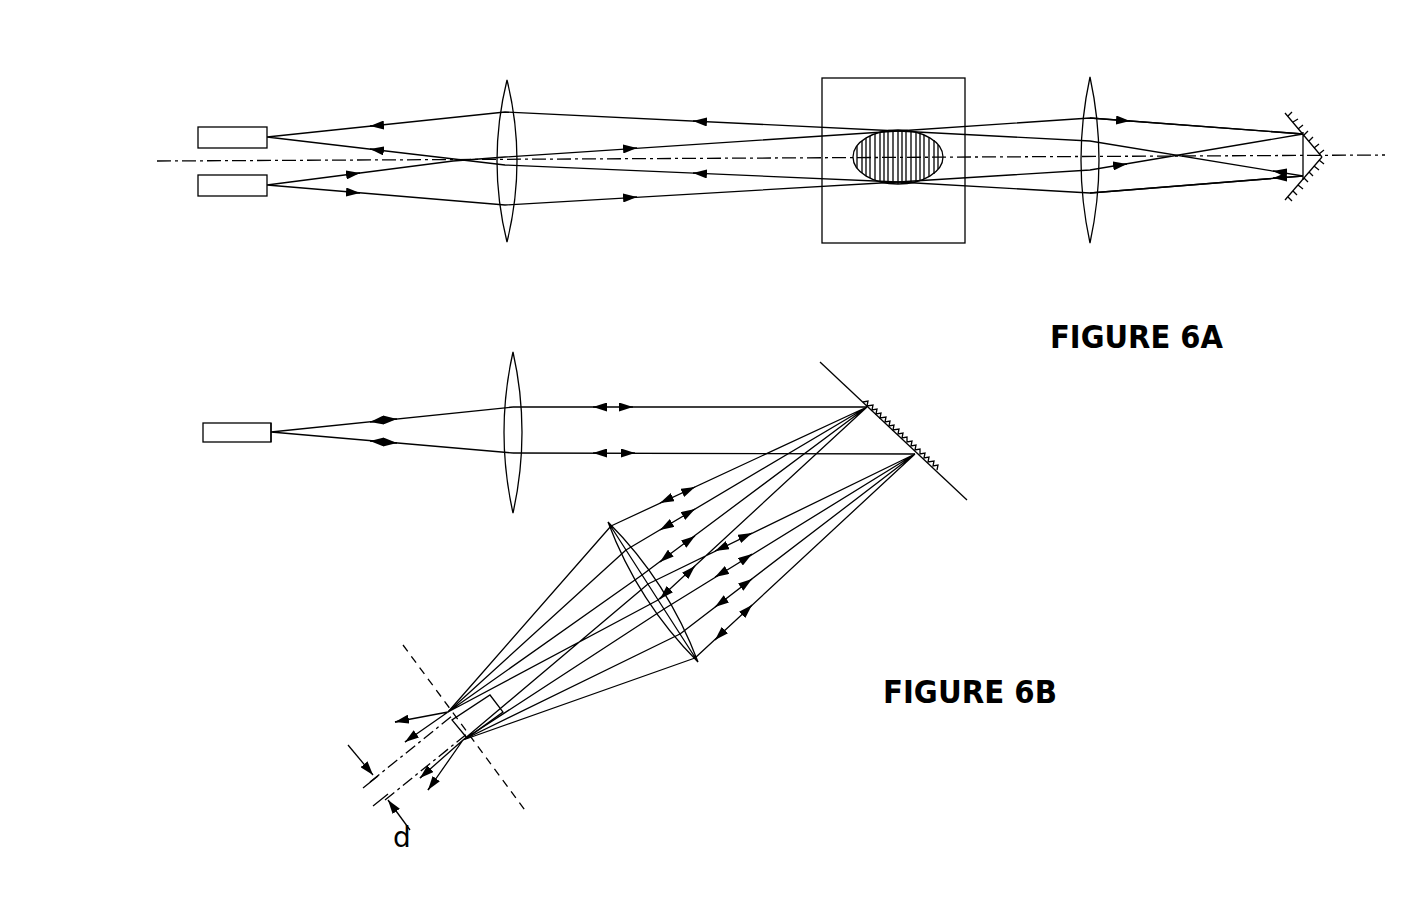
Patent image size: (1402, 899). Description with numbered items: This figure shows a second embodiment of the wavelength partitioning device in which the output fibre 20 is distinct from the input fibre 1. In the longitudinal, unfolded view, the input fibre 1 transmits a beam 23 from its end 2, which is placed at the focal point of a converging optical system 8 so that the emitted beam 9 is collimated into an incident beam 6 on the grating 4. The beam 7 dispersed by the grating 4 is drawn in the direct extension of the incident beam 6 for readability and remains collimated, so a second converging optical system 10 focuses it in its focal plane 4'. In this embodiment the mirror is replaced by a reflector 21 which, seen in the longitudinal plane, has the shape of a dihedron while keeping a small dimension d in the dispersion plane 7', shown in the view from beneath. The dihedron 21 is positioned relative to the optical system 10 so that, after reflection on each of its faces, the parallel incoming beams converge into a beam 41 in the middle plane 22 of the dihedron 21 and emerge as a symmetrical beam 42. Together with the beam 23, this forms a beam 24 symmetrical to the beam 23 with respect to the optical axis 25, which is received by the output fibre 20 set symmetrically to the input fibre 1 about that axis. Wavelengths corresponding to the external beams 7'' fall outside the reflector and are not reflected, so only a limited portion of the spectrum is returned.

In FIG. 6A, the input fibre 1 is at (220, 188).
In FIG. 6B, the input fibre 1 is at (228, 432).
In FIG. 6B, the end of the input fibre 2 is at (272, 430).
In FIG. 6A, the grating 4 is at (901, 191).
In FIG. 6B, the grating 4 is at (893, 431).
In FIG. 6B, the focal plane 4' is at (465, 720).
In FIG. 6B, the incident beam 6 is at (722, 425).
In FIG. 6B, the dispersed beam 7 is at (763, 532).
In FIG. 6B, the dispersion plane 7' is at (564, 658).
In FIG. 6B, the external beams 7'' is at (545, 658).
In FIG. 6A, the converging optical system 8 is at (507, 128).
In FIG. 6B, the converging optical system 8 is at (510, 388).
In FIG. 6B, the beam emitted from the end of the fibre 9 is at (413, 425).
In FIG. 6A, the converging optical system 10 is at (1092, 108).
In FIG. 6B, the converging optical system 10 is at (620, 558).
In FIG. 6A, the output fibre 20 is at (235, 133).
In FIG. 6A, the reflector 21 is at (1307, 132).
In FIG. 6B, the reflector 21 is at (455, 730).
In FIG. 6A, the middle plane of the dihedron 22 is at (1317, 157).
In FIG. 6A, the beam transmitted by the fibre 23 is at (422, 182).
In FIG. 6A, the beam 24 is at (407, 135).
In FIG. 6A, the optical axis 25 is at (172, 160).
In FIG. 6A, the beam 41 is at (1182, 140).
In FIG. 6A, the symmetrical beam 42 is at (1188, 182).